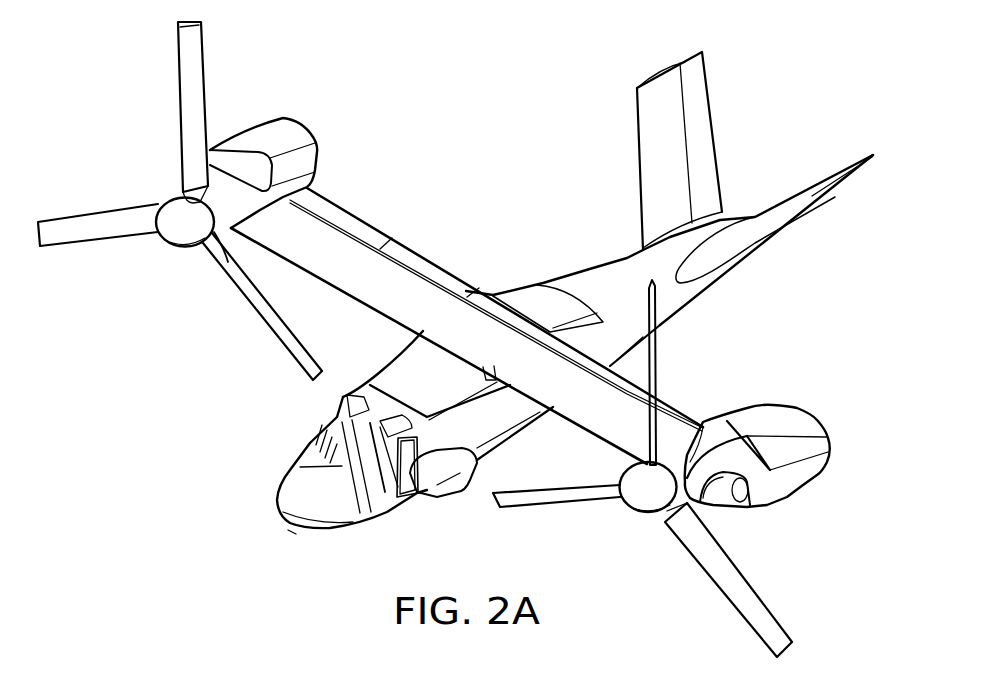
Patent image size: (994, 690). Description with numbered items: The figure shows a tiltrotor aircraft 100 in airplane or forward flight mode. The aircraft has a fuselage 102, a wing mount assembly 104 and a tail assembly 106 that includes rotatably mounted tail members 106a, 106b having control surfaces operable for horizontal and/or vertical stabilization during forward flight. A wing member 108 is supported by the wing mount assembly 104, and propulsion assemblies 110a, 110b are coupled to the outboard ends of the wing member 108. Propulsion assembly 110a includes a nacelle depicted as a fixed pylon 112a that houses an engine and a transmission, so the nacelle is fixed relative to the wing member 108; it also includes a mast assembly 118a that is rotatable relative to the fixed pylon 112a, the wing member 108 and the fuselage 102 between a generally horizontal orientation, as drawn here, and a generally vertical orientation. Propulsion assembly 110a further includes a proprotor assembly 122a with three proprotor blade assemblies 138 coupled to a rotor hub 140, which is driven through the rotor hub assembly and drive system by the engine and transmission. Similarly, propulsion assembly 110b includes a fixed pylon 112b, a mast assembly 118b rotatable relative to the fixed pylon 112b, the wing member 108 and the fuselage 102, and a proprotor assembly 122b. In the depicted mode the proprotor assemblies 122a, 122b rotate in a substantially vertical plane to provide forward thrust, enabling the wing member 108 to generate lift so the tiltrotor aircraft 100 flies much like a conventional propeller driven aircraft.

The tiltrotor aircraft 100 is at (528, 156).
The fuselage 102 is at (333, 531).
The wing mount assembly 104 is at (533, 297).
The tail assembly 106 is at (717, 112).
The tail member 106a is at (843, 181).
The tail member 106b is at (687, 57).
The wing member 108 is at (410, 292).
The propulsion assembly 110a is at (779, 403).
The propulsion assembly 110b is at (301, 117).
The fixed pylon 112a is at (801, 410).
The fixed pylon 112b is at (265, 132).
The mast assembly 118a is at (707, 437).
The mast assembly 118b is at (227, 262).
The proprotor assembly 122a is at (621, 515).
The proprotor assembly 122b is at (157, 242).
The proprotor blade assemblies 138 is at (720, 590).
The rotor hub 140 is at (633, 513).